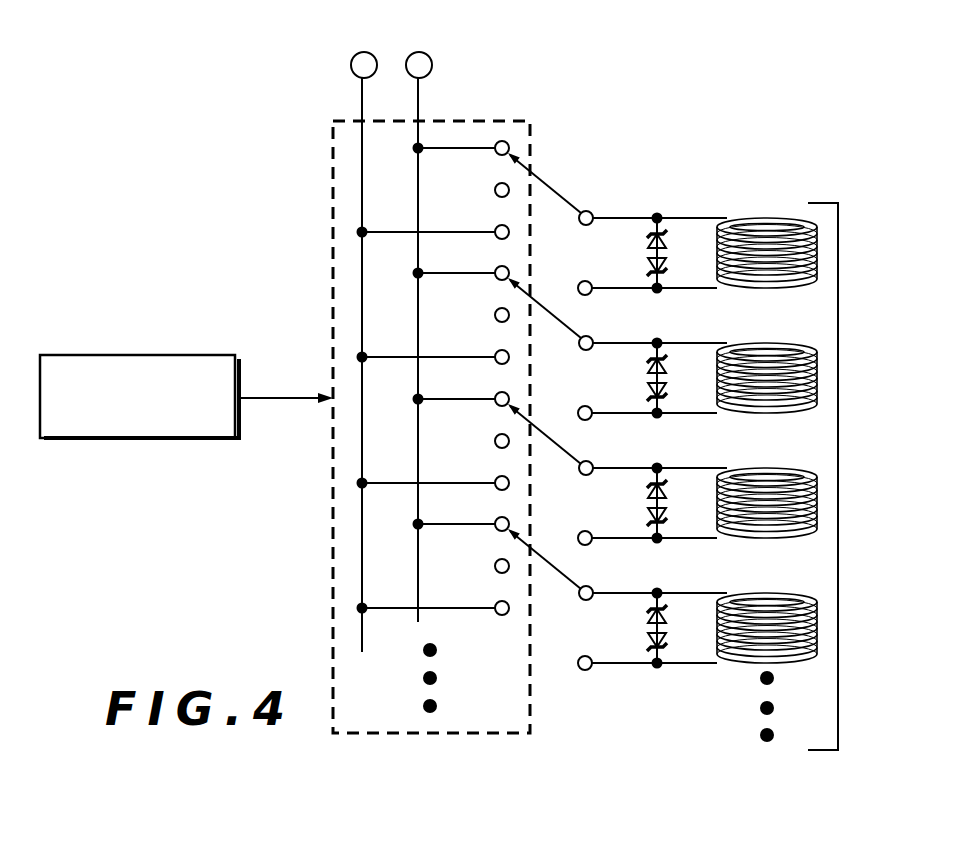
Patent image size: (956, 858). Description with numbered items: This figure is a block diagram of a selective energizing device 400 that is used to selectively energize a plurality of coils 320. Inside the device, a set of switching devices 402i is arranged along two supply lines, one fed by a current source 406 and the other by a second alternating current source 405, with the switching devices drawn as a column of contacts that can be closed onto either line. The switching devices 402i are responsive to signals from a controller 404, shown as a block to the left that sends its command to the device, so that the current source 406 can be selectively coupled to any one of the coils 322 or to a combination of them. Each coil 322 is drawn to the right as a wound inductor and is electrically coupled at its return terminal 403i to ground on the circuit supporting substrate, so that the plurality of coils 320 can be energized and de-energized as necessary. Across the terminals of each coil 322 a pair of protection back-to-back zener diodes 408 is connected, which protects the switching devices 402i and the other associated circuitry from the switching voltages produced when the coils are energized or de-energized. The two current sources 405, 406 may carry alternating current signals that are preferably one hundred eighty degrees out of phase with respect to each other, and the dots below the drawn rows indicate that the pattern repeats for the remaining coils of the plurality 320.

The plurality of coils 320 is at (838, 345).
The coil 322 is at (740, 216).
The selective energizing device 400 is at (490, 120).
The switching device 402i is at (557, 192).
The return terminal 403i is at (582, 281).
The controller 404 is at (82, 355).
The second alternating current source 405 is at (351, 64).
The current source 406 is at (432, 53).
The back-to-back zener diodes 408 is at (668, 240).